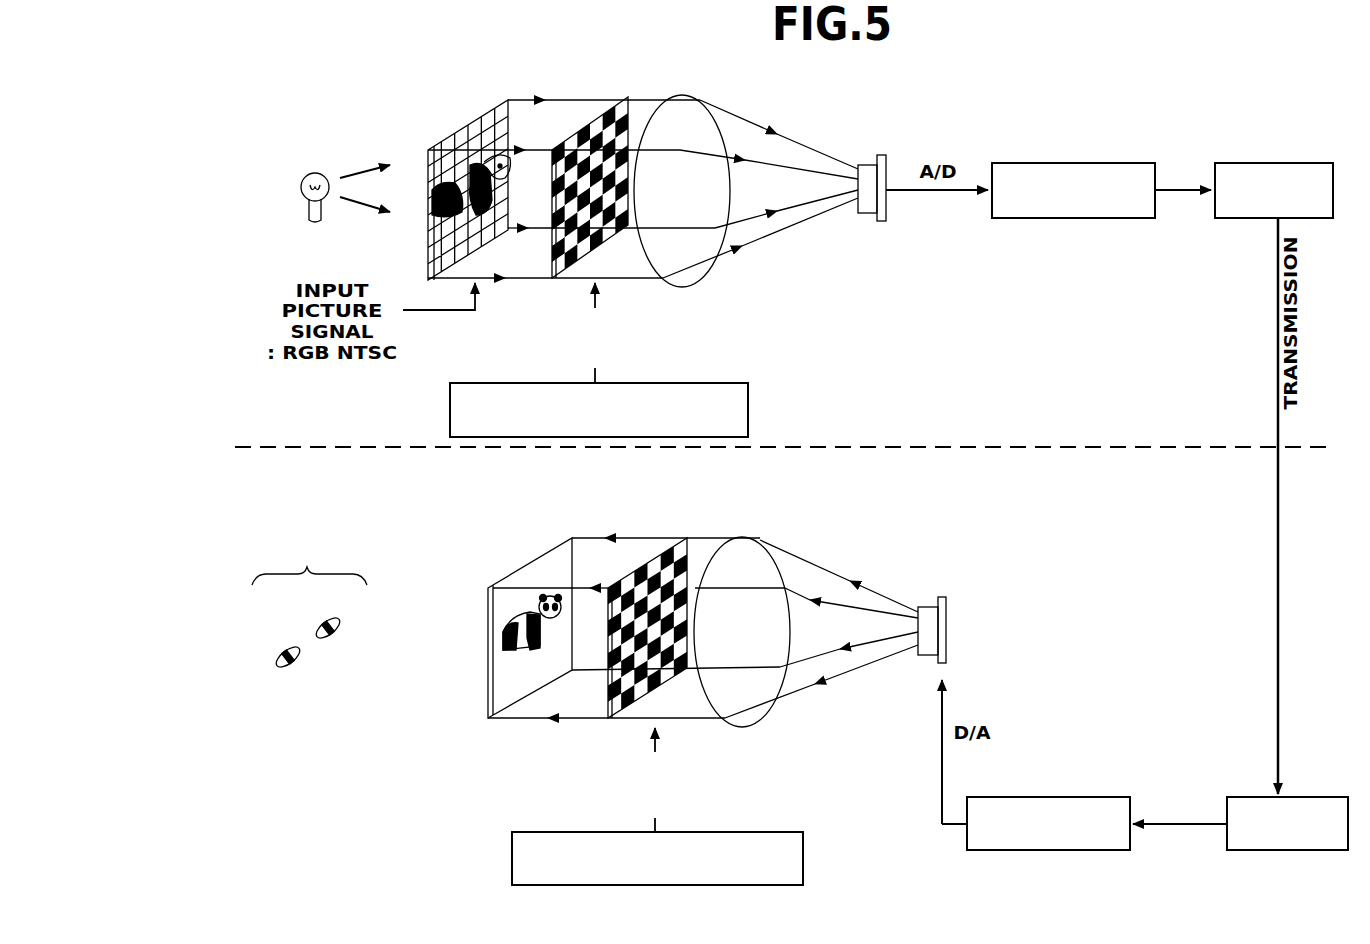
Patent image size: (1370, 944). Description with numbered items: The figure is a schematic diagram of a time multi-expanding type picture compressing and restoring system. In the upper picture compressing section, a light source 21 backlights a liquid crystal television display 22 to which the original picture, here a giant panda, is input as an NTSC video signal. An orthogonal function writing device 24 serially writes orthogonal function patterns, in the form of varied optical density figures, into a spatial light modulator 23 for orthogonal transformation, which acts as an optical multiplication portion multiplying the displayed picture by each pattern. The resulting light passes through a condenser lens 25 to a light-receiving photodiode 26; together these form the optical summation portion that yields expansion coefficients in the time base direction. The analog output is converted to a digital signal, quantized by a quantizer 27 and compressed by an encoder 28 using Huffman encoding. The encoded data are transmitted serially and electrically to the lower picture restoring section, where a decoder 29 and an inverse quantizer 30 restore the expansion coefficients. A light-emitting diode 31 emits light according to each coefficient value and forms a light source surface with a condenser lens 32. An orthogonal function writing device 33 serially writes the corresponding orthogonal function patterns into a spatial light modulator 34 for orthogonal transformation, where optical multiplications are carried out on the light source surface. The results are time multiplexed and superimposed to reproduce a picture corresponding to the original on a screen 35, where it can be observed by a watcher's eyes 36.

The light source 21 is at (306, 174).
The liquid crystal television display 22 is at (462, 130).
The spatial light modulator for orthogonal transformation 23 is at (572, 132).
The orthogonal function writing device 24 is at (752, 406).
The condenser lens 25 is at (689, 117).
The light-receiving photodiode 26 is at (870, 214).
The quantizer 27 is at (1045, 162).
The encoder 28 is at (1298, 162).
The decoder 29 is at (1312, 797).
The inverse quantizer 30 is at (1075, 797).
The light-emitting diode 31 is at (950, 617).
The condenser lens 32 is at (742, 553).
The orthogonal function writing device 33 is at (805, 850).
The spatial light modulator for orthogonal transformation 34 is at (630, 570).
The screen 35 is at (488, 612).
The watcher's eyes 36 is at (309, 606).